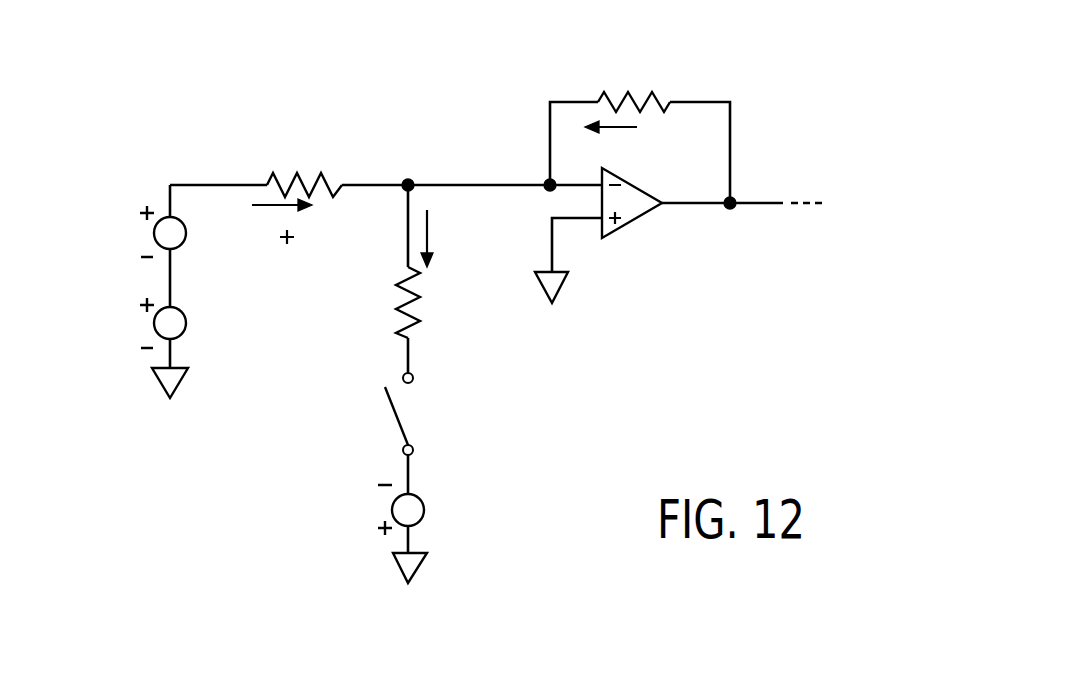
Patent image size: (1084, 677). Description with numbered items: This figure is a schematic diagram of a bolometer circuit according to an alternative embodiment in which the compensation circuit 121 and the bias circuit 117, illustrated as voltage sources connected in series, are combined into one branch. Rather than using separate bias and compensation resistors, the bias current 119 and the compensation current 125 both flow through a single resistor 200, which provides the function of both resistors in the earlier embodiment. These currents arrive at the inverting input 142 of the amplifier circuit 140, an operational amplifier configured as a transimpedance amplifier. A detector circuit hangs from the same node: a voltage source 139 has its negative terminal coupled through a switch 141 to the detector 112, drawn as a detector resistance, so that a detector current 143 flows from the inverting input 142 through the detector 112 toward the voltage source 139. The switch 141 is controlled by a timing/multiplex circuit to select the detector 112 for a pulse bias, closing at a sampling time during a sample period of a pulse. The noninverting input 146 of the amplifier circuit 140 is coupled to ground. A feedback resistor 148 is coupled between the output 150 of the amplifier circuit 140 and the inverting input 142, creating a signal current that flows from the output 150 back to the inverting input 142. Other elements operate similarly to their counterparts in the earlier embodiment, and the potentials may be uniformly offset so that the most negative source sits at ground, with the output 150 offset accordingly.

The compensation circuit 121 is at (162, 215).
The bias circuit 117 is at (185, 325).
The resistor 200 is at (313, 128).
The bias current 119 is at (243, 253).
The compensation current 125 is at (327, 248).
The detector current 143 is at (430, 222).
The detector 112 is at (410, 332).
The switch 141 is at (405, 423).
The voltage source 139 is at (425, 510).
The inverting input 142 is at (572, 190).
The amplifier circuit 140 is at (738, 144).
The feedback resistor 148 is at (630, 53).
The output 150 is at (757, 203).
The noninverting input 146 is at (578, 220).